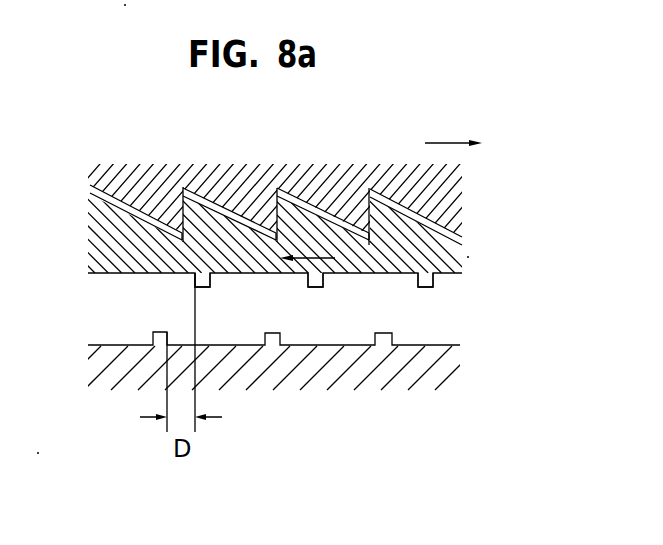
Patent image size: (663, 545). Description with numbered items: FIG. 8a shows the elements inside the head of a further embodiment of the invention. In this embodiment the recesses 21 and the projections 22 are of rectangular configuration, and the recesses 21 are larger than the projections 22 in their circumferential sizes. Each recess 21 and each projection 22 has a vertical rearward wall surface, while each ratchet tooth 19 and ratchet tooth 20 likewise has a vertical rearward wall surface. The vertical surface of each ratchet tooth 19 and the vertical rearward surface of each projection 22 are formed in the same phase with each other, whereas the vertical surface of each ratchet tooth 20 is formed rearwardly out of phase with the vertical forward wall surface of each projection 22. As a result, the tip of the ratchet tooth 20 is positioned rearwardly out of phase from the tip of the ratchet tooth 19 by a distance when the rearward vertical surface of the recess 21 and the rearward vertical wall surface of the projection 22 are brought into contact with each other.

The ratchet tooth 19 is at (268, 177).
The ratchet tooth 20 is at (324, 131).
The projection 22 is at (260, 300).
The recess 21 is at (230, 337).